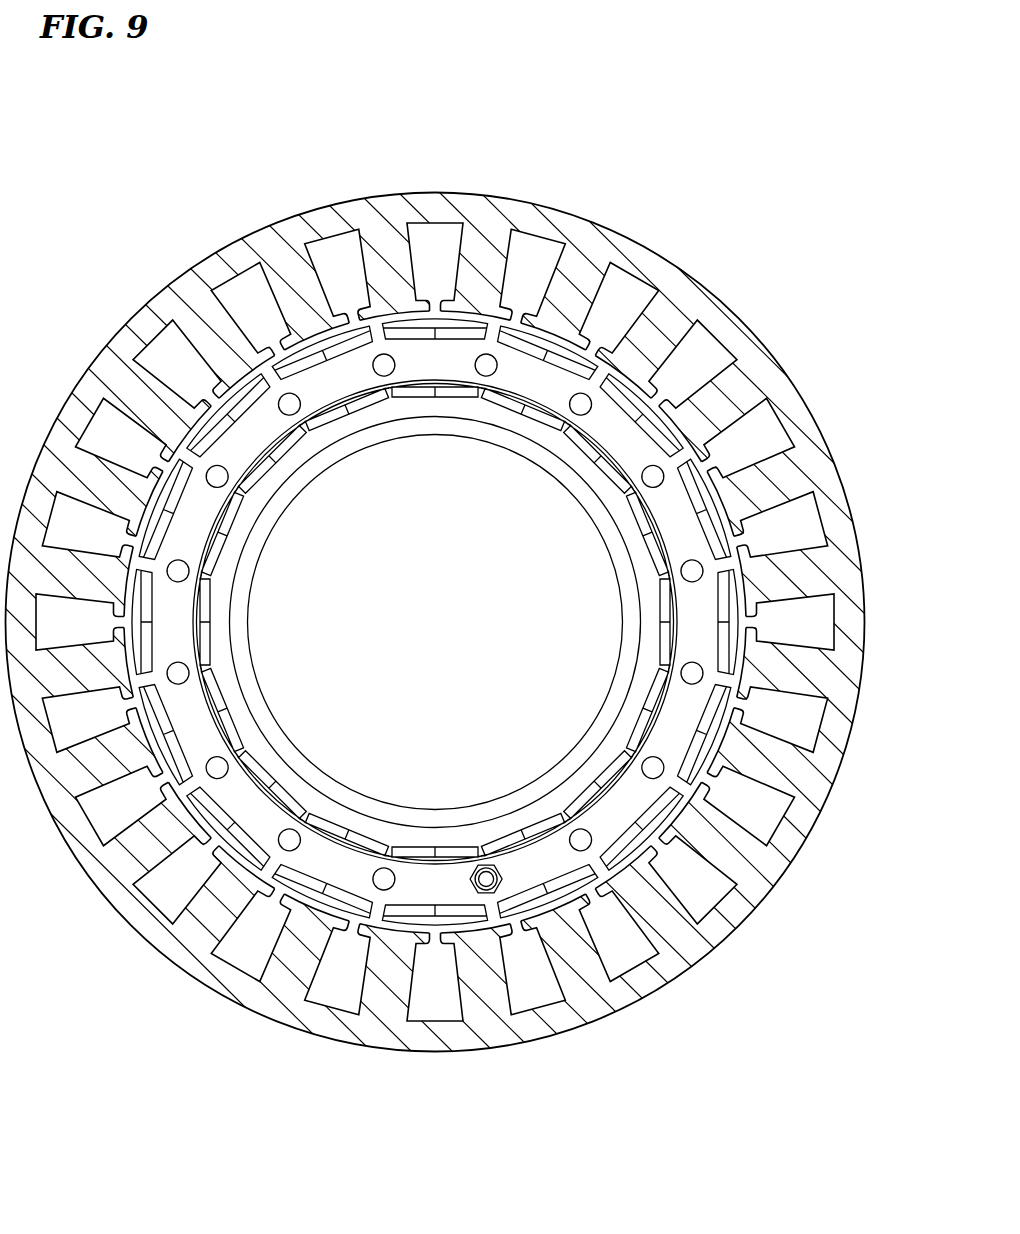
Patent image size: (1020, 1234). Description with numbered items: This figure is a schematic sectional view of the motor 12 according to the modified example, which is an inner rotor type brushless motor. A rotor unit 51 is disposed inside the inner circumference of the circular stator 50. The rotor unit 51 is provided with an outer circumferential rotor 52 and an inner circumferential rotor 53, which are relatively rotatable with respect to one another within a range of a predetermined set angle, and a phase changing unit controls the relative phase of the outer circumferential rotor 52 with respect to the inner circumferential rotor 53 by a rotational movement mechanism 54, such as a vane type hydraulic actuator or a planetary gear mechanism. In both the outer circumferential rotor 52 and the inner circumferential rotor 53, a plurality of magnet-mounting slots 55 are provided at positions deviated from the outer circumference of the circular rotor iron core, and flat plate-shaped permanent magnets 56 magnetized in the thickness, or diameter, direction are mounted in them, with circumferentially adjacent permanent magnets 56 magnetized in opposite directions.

The motor 12 is at (643, 143).
The circular stator 50 is at (435, 622).
The rotor unit 51 is at (469, 517).
The outer circumferential rotor 52 is at (445, 517).
The inner circumferential rotor 53 is at (506, 577).
The rotational movement mechanism 54 is at (540, 611).
The magnet-mounting slot 55 is at (435, 517).
The permanent magnet 56 is at (376, 514).